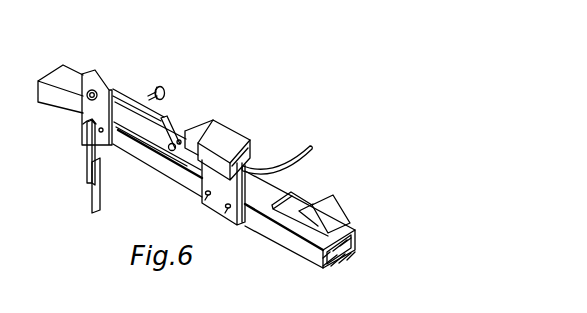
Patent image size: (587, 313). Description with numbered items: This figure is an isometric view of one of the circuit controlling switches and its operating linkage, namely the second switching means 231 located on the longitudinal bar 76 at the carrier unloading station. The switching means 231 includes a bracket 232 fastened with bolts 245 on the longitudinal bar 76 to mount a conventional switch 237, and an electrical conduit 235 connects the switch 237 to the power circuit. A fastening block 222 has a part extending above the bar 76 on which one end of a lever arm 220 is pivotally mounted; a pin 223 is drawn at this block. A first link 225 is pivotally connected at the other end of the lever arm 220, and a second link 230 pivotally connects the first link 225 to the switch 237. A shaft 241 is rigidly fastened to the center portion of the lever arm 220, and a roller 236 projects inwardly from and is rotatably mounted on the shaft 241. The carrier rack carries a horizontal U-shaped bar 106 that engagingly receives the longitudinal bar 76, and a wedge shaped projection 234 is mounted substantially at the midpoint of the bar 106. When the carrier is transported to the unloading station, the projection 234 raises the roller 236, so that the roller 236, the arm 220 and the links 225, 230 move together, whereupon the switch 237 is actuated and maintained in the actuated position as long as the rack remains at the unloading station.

The longitudinal bar 76 is at (292, 243).
The horizontal U-shaped bar 106 is at (293, 198).
The lever arm 220 is at (126, 90).
The fastening block 222 is at (86, 124).
The pin 223 is at (99, 133).
The first link 225 is at (174, 130).
The second link 230 is at (173, 164).
The second switching means 231 is at (236, 128).
The bracket 232 is at (238, 221).
The wedge shaped projection 234 is at (330, 208).
The electrical conduit 235 is at (270, 170).
The roller 236 is at (164, 91).
The switch 237 is at (243, 151).
The shaft 241 is at (153, 92).
The bolts 245 is at (226, 209).